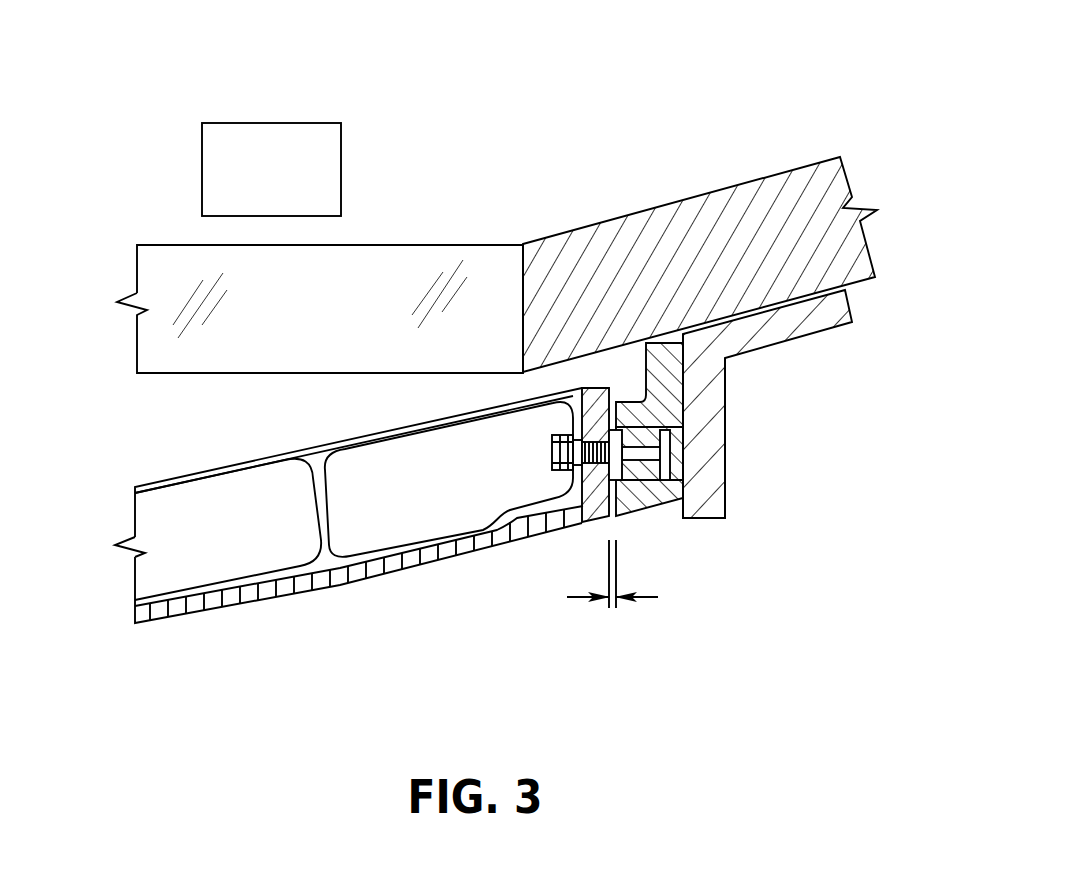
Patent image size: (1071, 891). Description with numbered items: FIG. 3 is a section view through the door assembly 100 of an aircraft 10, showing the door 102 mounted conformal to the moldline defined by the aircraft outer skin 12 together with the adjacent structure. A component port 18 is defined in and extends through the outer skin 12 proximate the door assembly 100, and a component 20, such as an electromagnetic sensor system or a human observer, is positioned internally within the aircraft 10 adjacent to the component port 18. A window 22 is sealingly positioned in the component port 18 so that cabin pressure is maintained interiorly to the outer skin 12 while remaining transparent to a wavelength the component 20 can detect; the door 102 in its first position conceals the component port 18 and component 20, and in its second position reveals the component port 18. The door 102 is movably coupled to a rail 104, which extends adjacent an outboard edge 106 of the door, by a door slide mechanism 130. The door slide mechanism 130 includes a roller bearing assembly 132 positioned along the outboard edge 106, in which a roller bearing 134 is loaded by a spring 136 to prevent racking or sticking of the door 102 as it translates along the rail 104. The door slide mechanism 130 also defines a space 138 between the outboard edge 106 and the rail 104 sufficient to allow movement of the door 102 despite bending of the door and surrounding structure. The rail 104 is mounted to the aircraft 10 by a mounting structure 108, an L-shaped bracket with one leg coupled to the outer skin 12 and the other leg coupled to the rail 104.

The aircraft 10 is at (782, 113).
The outer skin 12 is at (858, 283).
The component port 18 is at (505, 228).
The component 20 is at (257, 123).
The window 22 is at (137, 271).
The door assembly 100 is at (717, 625).
The door 102 is at (210, 612).
The rail 104 is at (640, 512).
The outboard edge 106 is at (593, 502).
The mounting structure 108 is at (727, 472).
The door slide mechanism 130 is at (547, 455).
The roller bearing assembly 132 is at (508, 542).
The roller bearing 134 is at (642, 472).
The spring 136 is at (600, 392).
The space 138 is at (612, 608).